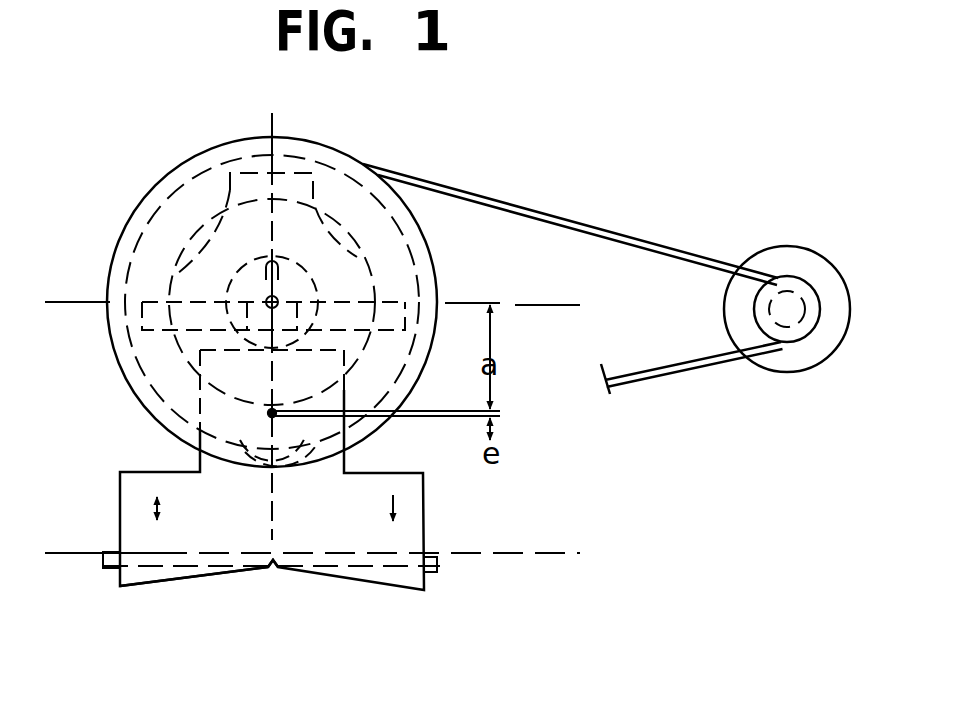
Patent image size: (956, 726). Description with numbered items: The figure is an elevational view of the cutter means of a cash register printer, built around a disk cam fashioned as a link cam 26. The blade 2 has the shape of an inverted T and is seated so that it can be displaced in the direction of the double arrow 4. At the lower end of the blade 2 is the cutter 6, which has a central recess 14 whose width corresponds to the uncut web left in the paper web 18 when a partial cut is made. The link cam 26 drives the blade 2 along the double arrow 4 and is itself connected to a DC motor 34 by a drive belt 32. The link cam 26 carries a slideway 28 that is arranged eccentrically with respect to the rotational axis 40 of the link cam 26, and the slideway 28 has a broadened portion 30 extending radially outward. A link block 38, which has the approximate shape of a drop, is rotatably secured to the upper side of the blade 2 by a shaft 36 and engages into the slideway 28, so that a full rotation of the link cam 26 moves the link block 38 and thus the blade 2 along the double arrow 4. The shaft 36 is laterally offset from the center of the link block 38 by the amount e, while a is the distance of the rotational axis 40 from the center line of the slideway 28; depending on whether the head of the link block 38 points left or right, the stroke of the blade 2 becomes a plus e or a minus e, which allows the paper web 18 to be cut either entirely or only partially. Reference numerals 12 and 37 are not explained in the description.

The blade 2 is at (322, 514).
The double arrow 4 is at (152, 500).
The cutter 6 is at (243, 583).
The hammer side 12 is at (397, 507).
The central recess 14 is at (277, 569).
The paper web 18 is at (147, 550).
The link cam 26 is at (300, 134).
The slideway 28 is at (342, 283).
The broadened portion 30 is at (257, 187).
The drive belt 32 is at (600, 228).
The DC motor 34 is at (797, 268).
The shaft 36 is at (268, 410).
The eccentric 37 is at (252, 427).
The link block 38 is at (280, 416).
The rotational axis 40 is at (265, 296).